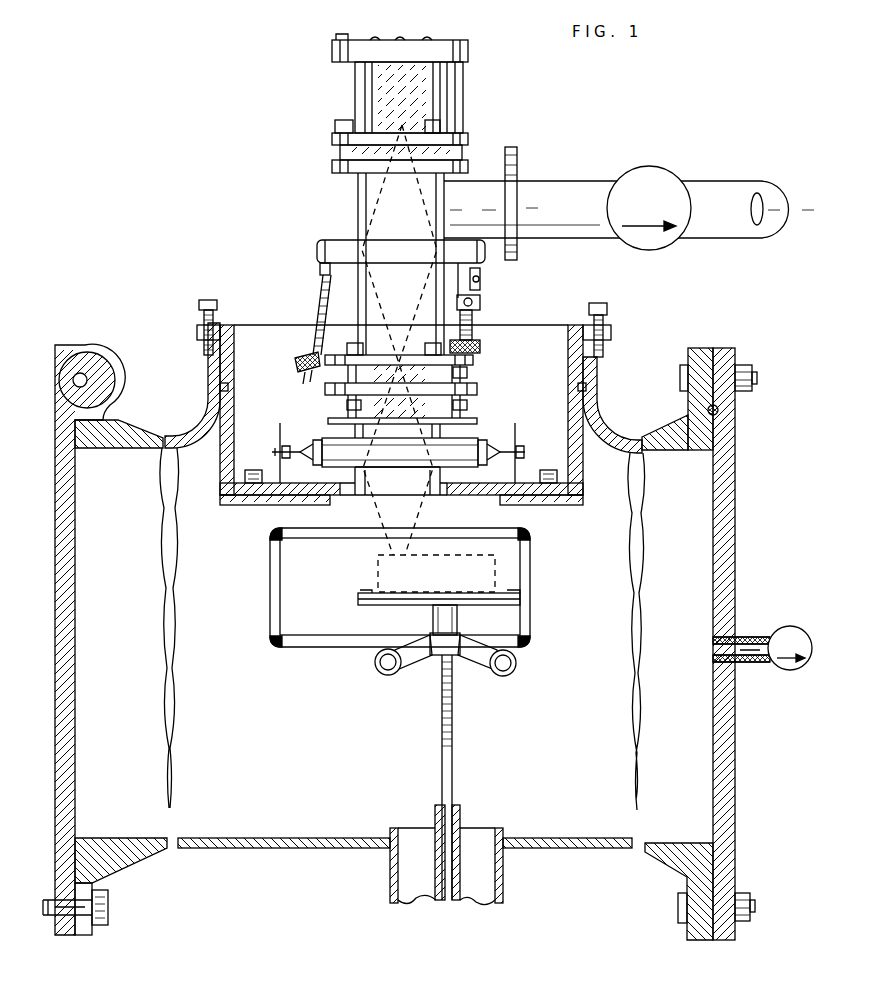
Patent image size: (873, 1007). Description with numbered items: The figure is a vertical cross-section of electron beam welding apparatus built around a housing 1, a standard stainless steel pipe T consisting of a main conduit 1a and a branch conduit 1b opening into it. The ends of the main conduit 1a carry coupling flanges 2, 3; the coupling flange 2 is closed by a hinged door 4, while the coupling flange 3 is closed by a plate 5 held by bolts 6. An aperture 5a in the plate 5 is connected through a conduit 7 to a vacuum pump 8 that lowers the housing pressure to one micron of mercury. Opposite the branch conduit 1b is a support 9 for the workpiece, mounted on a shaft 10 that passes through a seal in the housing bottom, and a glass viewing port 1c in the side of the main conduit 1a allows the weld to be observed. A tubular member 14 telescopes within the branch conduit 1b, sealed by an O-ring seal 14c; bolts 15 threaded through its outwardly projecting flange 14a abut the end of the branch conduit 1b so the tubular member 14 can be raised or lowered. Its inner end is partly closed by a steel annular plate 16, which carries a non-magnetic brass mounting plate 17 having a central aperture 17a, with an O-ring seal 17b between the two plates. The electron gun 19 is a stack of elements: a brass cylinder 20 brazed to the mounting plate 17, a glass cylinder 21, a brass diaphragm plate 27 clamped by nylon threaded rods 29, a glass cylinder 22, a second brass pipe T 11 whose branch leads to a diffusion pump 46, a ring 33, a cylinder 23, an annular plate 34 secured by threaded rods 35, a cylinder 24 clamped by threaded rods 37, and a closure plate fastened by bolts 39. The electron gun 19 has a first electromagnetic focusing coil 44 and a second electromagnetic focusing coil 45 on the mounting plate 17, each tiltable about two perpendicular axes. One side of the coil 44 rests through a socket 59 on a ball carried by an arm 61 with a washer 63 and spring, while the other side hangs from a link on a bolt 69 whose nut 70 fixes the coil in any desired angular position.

The housing 1 is at (427, 631).
The main conduit 1a is at (190, 440).
The branch conduit 1b is at (208, 395).
The viewing port 1c is at (376, 714).
The coupling flange 2 is at (108, 862).
The coupling flange 3 is at (687, 870).
The hinged door 4 is at (76, 660).
The plate 5 is at (728, 462).
The aperture 5a is at (713, 655).
The bolts 6 is at (745, 372).
The conduit 7 is at (752, 637).
The vacuum pump 8 is at (795, 628).
The support 9 is at (358, 600).
The shaft 10 is at (440, 722).
The pipe T 11 is at (357, 205).
The tubular member 14 is at (590, 420).
The outwardly projecting flange 14a is at (197, 332).
The O-ring seal 14c is at (228, 390).
The bolts 15 is at (208, 300).
The annular plate 16 is at (407, 397).
The mounting plate 17 is at (340, 503).
The central aperture 17a is at (432, 503).
The O-ring seal 17b is at (262, 506).
The electron gun 19 is at (533, 289).
The cylinder 20 is at (356, 432).
The cylinder 21 is at (356, 408).
The cylinder 22 is at (470, 372).
The cylinder 23 is at (445, 152).
The cylinder 24 is at (356, 88).
The diaphragm plate 27 is at (325, 390).
The threaded rods 29 is at (470, 405).
The ring 33 is at (333, 165).
The annular plate 34 is at (334, 140).
The threaded rods 35 is at (340, 152).
The threaded rods 37 is at (463, 108).
The bolts 39 is at (336, 34).
The first electromagnetic focusing coil 44 is at (318, 252).
The second electromagnetic focusing coil 45 is at (465, 455).
The diffusion pump 46 is at (647, 168).
The socket 59 is at (318, 270).
The arm 61 is at (318, 305).
The washer 63 is at (300, 357).
The bolt 69 is at (474, 325).
The nut 70 is at (480, 348).